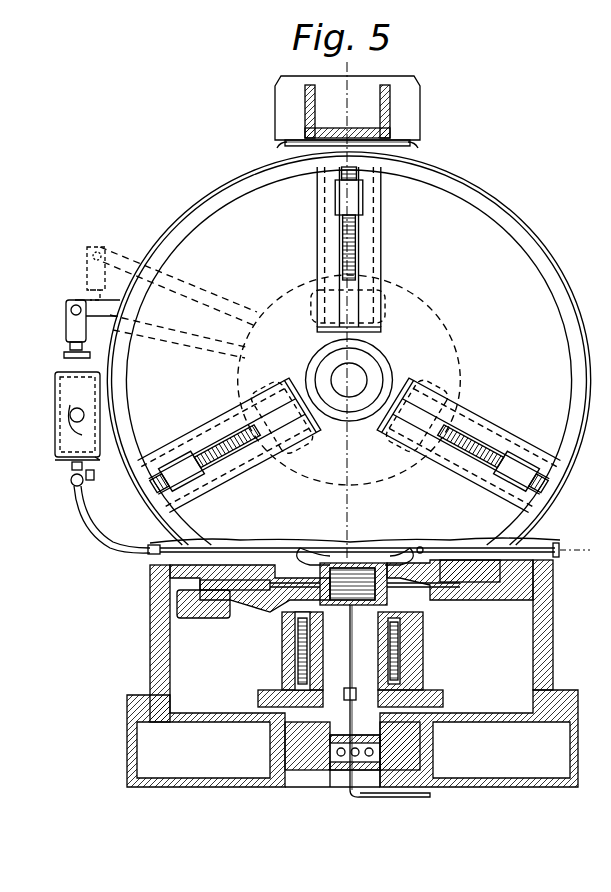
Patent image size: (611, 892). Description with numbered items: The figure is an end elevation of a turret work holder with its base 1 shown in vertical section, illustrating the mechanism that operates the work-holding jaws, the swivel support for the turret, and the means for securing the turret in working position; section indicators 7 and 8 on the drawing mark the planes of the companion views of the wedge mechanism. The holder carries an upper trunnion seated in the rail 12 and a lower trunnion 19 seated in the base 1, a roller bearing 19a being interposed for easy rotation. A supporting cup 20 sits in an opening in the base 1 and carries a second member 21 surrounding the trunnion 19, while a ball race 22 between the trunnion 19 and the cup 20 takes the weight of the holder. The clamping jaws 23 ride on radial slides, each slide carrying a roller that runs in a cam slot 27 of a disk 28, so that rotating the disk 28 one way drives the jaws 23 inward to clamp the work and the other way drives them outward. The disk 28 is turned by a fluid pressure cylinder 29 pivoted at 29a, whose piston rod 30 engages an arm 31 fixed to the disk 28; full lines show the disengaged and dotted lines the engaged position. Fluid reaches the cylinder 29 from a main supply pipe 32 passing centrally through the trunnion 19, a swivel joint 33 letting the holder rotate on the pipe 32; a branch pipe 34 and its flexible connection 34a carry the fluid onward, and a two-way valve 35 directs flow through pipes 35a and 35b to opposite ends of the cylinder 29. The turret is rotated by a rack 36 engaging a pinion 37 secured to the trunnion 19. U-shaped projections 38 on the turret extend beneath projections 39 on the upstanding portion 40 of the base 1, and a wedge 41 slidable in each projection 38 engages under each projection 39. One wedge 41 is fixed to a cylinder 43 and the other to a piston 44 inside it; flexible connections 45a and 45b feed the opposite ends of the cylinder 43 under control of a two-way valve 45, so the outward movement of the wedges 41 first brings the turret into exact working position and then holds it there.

The base 1 is at (132, 770).
The section line 7 is at (557, 556).
The section line 8 is at (590, 573).
The rail 12 is at (405, 105).
The trunnion 19 is at (443, 692).
The roller bearing 19a is at (300, 638).
The supporting cup 20 is at (320, 775).
The second member 21 is at (282, 665).
The ball race 22 is at (365, 765).
The clamping jaws 23 is at (349, 342).
The cam slot 27 is at (295, 380).
The disk 28 is at (348, 348).
The fluid pressure cylinder 29 is at (65, 440).
The pivot 29a is at (70, 415).
The piston rod 30 is at (68, 330).
The arm 31 is at (110, 316).
The main supply pipe 32 is at (412, 800).
The swivel joint 33 is at (354, 688).
The branch pipe 34 is at (232, 546).
The flexible connection 34a is at (104, 532).
The two-way valve 35 is at (72, 482).
The pipe 35a is at (72, 468).
The pipe 35b is at (94, 476).
The rack 36 is at (432, 730).
The pinion 37 is at (300, 732).
The U-shaped projections 38 is at (202, 618).
The projections 39 is at (165, 567).
The upstanding portion 40 is at (150, 650).
The wedge 41 is at (170, 598).
The cylinder 43 is at (372, 562).
The piston 44 is at (340, 562).
The two-way valve 45 is at (468, 550).
The flexible connection 45a is at (302, 550).
The flexible connection 45b is at (422, 550).